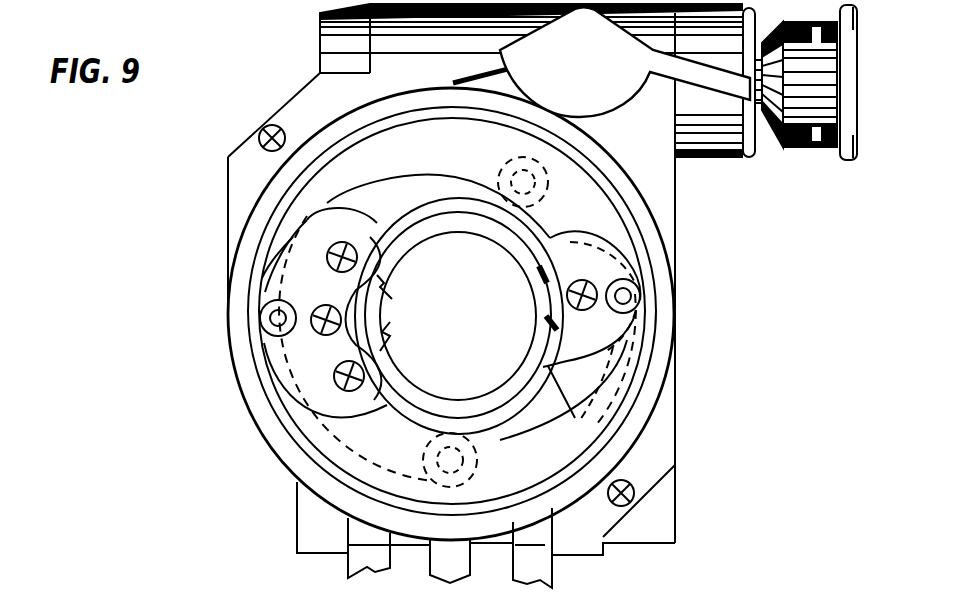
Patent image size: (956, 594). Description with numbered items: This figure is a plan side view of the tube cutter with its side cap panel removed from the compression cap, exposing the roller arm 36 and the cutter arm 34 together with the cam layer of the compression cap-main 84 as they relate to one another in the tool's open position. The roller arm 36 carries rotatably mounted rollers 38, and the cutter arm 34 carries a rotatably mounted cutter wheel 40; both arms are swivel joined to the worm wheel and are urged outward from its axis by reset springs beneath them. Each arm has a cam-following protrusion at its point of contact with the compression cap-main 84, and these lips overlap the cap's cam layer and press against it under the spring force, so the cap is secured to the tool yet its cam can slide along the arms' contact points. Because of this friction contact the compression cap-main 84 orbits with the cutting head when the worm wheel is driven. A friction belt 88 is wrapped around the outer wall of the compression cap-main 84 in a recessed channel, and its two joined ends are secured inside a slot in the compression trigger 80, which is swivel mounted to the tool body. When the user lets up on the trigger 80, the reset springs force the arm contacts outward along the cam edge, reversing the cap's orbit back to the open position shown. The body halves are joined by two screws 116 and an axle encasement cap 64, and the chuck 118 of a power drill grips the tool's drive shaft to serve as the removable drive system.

The cutter arm 34 is at (555, 388).
The roller arm 36 is at (303, 330).
The rollers 38 is at (369, 314).
The cutter wheel 40 is at (540, 298).
The axle encasement cap 64 is at (718, 162).
The compression trigger 80 is at (563, 20).
The compression cap-main 84 is at (234, 328).
The friction belt 88 is at (480, 74).
The screws 116 is at (267, 127).
The chuck 118 is at (791, 150).